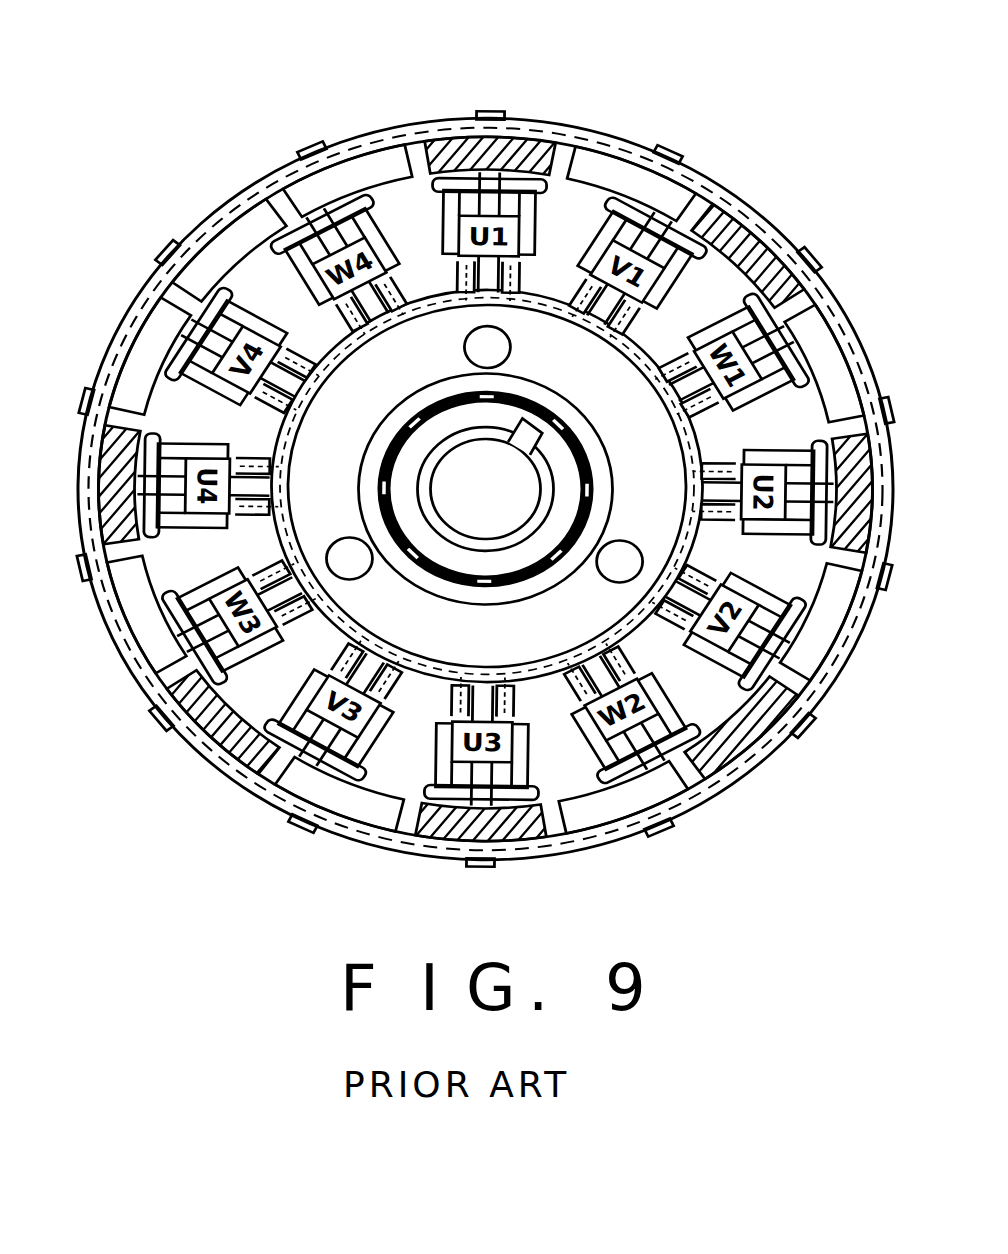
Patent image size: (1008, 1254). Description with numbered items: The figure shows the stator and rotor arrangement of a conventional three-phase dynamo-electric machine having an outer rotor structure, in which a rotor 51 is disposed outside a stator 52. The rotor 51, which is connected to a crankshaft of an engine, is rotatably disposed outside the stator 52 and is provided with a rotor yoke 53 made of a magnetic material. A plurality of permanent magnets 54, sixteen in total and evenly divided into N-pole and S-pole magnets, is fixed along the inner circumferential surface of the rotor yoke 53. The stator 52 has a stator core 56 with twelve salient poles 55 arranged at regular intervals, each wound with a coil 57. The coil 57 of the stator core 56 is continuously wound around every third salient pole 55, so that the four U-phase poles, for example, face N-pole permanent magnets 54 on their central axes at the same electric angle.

The rotor 51 is at (762, 197).
The stator 52 is at (365, 603).
The rotor yoke 53 is at (223, 213).
The permanent magnet 54 is at (382, 166).
The salient pole 55 is at (632, 207).
The stator core 56 is at (303, 513).
The coil 57 is at (530, 216).